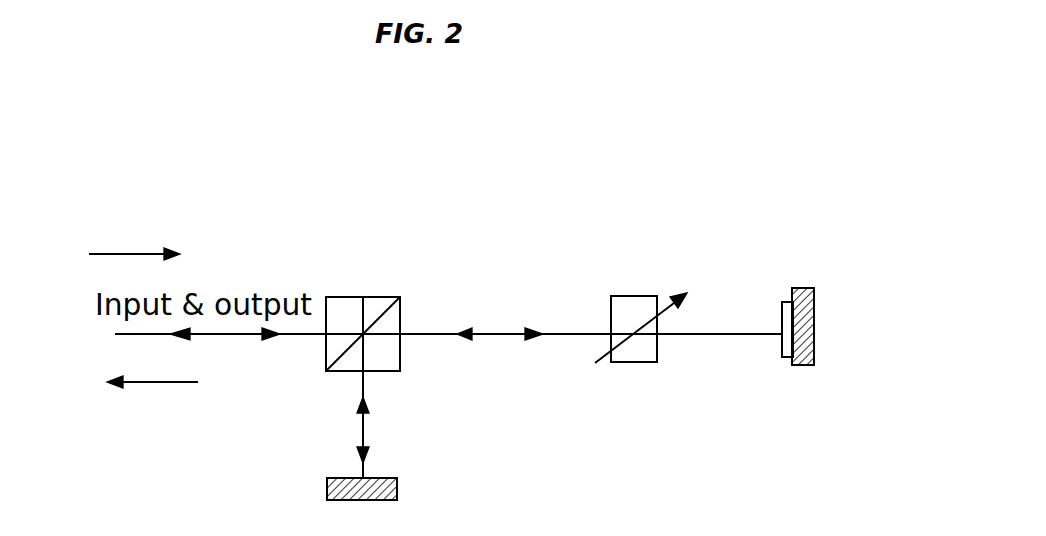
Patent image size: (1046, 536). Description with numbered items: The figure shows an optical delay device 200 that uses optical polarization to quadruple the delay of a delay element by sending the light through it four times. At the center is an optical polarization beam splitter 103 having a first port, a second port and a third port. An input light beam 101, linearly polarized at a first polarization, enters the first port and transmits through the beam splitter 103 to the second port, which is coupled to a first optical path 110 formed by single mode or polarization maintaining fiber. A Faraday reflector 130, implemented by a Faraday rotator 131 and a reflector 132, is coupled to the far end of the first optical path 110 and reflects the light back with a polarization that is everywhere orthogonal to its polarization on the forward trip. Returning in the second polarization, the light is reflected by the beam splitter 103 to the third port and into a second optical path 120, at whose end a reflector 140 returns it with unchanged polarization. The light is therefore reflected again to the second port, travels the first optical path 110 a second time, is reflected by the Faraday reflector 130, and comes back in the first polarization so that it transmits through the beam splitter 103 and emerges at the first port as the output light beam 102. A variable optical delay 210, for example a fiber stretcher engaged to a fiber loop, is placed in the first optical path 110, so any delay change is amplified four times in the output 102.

The input light beam 101 is at (113, 254).
The output light beam 102 is at (165, 382).
The optical polarization beam splitter (PBS) 103 is at (363, 302).
The first optical path 110 is at (435, 325).
The second optical path 120 is at (377, 407).
The Faraday reflector 130 is at (777, 275).
The Faraday rotator 131 is at (782, 312).
The reflector 132 is at (817, 323).
The reflector 140 is at (367, 500).
The optical delay device 200 is at (314, 152).
The variable optical delay 210 is at (633, 365).